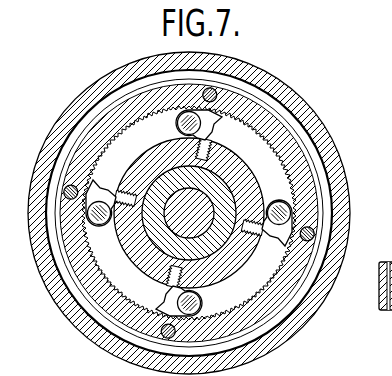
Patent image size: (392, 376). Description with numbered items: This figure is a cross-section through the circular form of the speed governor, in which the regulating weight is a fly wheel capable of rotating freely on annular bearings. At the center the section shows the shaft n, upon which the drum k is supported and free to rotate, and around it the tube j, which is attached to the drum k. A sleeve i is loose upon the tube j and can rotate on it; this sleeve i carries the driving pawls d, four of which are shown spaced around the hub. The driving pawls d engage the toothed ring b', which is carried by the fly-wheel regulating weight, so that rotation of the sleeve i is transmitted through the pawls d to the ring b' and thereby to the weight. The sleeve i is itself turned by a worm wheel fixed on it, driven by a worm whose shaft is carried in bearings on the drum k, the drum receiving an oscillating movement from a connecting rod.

The drum k is at (288, 316).
The toothed ring b' is at (196, 188).
The shaft n is at (198, 235).
The tube j is at (218, 226).
The driving pawl d is at (214, 119).
The sleeve i is at (241, 153).